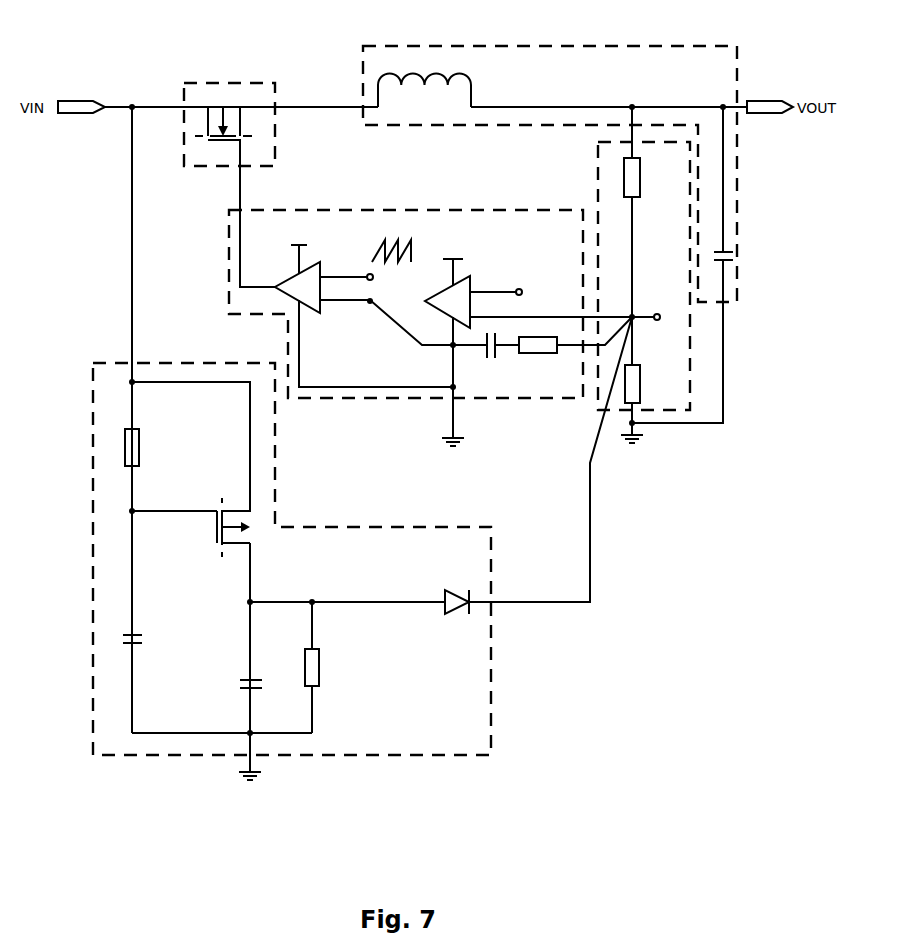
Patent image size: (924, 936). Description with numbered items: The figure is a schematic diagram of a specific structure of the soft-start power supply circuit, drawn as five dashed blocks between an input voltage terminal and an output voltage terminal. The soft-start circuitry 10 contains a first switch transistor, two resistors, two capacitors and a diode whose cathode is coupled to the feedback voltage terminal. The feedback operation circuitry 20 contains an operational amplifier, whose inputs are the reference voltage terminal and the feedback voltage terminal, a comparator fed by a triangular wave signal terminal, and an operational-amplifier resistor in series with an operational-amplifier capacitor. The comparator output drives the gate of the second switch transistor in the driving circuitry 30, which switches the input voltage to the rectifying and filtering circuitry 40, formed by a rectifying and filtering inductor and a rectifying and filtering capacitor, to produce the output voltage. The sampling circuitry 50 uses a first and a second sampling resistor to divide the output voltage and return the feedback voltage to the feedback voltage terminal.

The soft-start circuitry 10 is at (477, 700).
The feedback operation circuitry 20 is at (482, 214).
The driving circuitry 30 is at (224, 97).
The rectifying and filtering circuitry 40 is at (553, 60).
The sampling circuitry 50 is at (675, 352).